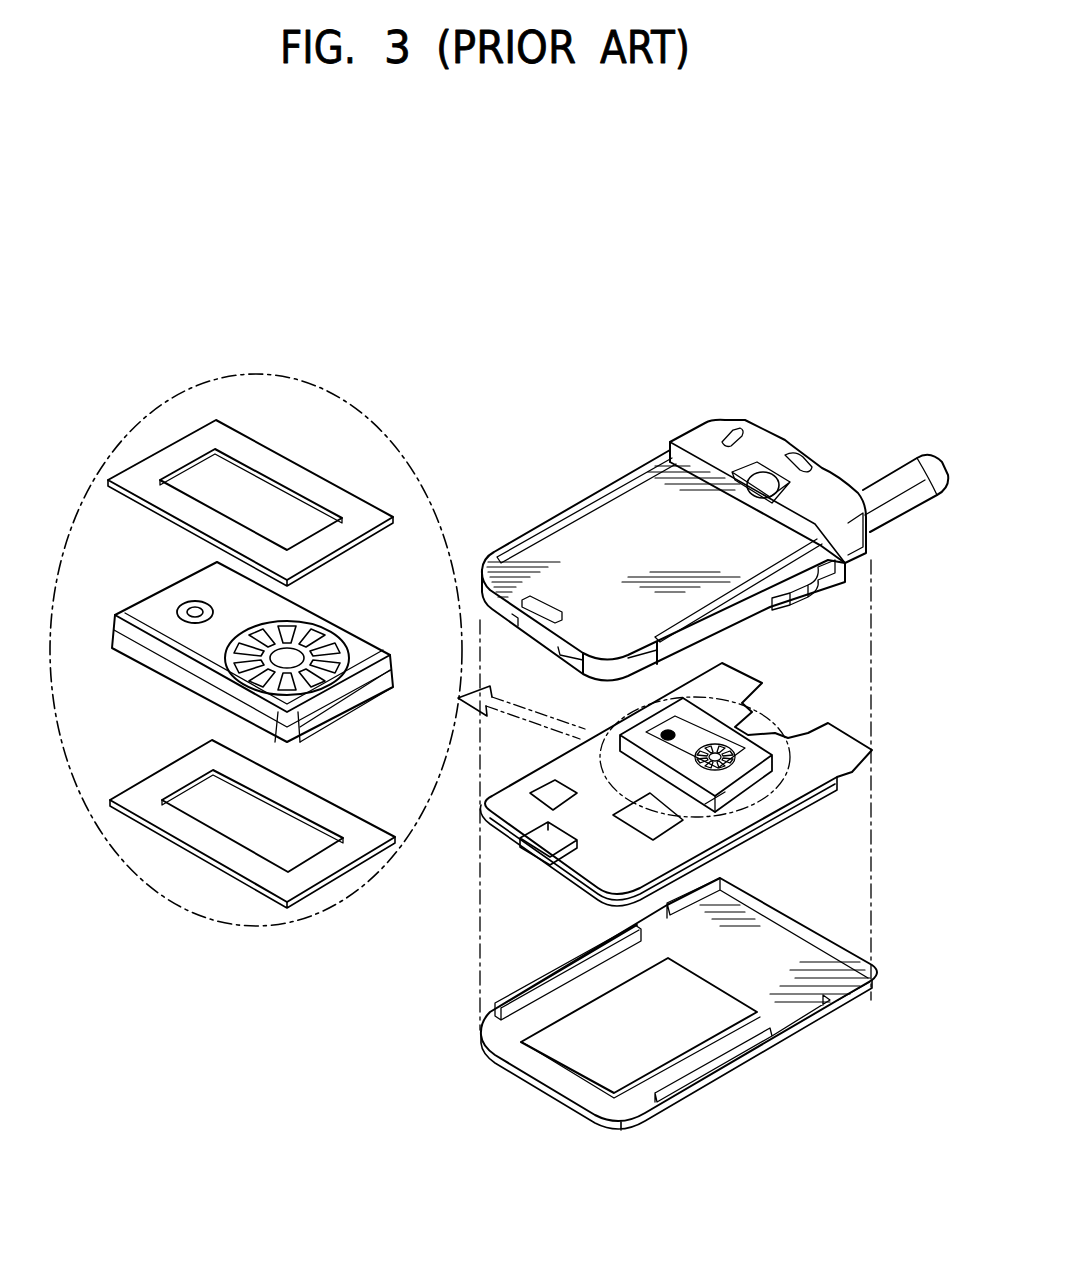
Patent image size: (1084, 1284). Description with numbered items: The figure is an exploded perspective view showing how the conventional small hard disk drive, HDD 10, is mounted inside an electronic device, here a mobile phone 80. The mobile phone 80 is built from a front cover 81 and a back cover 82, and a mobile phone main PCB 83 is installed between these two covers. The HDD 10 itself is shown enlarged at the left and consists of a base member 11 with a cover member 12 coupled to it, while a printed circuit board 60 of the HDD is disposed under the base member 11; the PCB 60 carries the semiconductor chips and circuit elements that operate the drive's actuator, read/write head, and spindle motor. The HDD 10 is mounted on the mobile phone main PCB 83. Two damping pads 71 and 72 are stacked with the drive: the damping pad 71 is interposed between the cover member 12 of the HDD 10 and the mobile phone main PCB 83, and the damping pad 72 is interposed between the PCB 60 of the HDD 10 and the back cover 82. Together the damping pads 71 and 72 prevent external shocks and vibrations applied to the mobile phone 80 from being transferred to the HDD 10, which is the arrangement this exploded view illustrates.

The HDD 10 is at (166, 685).
The base member 11 is at (365, 688).
The cover member 12 is at (368, 700).
The printed circuit board 60 is at (280, 617).
The damping pad 71 is at (300, 800).
The damping pad 72 is at (297, 478).
The mobile phone 80 is at (587, 456).
The front cover 81 is at (760, 960).
The back cover 82 is at (835, 550).
The mobile phone main PCB 83 is at (830, 745).